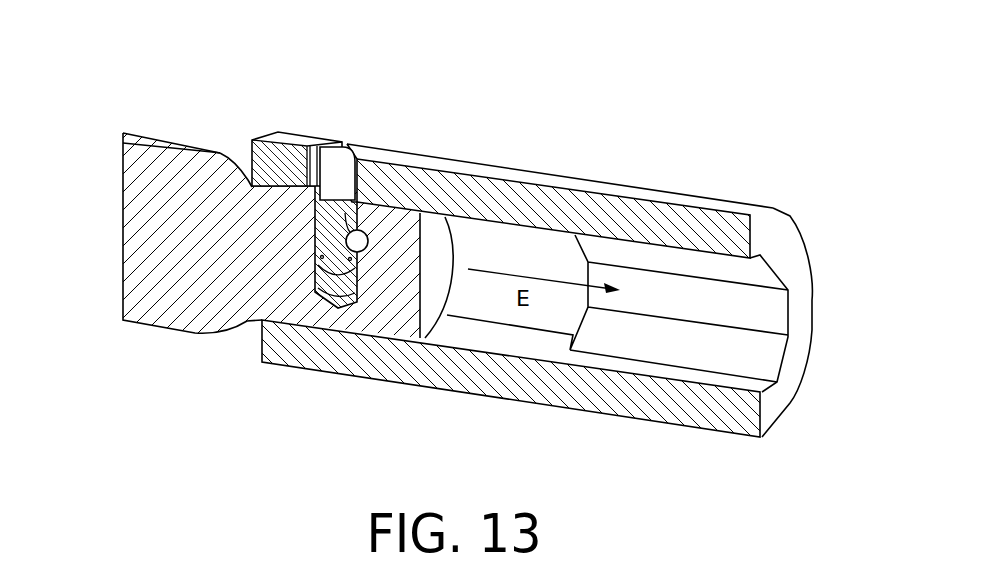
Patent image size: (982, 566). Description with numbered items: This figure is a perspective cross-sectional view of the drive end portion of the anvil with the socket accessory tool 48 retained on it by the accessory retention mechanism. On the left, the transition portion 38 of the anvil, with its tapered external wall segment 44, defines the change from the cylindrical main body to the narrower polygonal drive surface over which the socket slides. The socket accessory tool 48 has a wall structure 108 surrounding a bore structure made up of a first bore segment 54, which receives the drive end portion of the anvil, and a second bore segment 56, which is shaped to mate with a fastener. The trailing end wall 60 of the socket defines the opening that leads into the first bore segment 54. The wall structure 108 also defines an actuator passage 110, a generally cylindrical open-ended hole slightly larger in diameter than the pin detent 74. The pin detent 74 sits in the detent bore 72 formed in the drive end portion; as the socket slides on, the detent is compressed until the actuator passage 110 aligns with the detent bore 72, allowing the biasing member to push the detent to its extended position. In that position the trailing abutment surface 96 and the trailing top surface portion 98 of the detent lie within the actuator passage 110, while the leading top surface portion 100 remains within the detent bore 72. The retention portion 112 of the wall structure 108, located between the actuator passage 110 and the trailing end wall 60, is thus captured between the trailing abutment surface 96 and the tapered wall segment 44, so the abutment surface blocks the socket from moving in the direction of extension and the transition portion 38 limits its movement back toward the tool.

The transition portion 38 is at (163, 142).
The tapered external wall segment 44 is at (212, 150).
The trailing end wall 60 is at (247, 177).
The trailing abutment surface 96 is at (292, 188).
The socket accessory tool 48 is at (678, 200).
The wall structure 108 is at (405, 152).
The detent bore 72 is at (377, 153).
The second bore segment 56 is at (697, 345).
The first bore segment 54 is at (363, 333).
The pin detent 74 is at (317, 257).
The leading top surface portion 100 is at (333, 228).
The retention portion 112 is at (275, 177).
The actuator passage 110 is at (320, 176).
The trailing top surface portion 98 is at (342, 165).